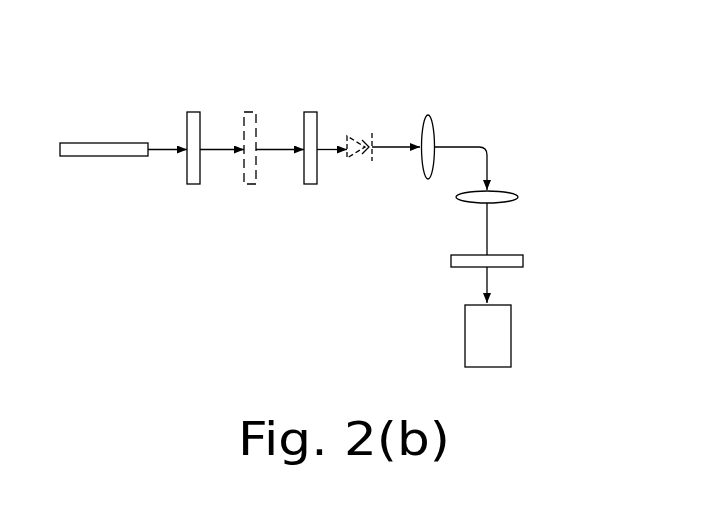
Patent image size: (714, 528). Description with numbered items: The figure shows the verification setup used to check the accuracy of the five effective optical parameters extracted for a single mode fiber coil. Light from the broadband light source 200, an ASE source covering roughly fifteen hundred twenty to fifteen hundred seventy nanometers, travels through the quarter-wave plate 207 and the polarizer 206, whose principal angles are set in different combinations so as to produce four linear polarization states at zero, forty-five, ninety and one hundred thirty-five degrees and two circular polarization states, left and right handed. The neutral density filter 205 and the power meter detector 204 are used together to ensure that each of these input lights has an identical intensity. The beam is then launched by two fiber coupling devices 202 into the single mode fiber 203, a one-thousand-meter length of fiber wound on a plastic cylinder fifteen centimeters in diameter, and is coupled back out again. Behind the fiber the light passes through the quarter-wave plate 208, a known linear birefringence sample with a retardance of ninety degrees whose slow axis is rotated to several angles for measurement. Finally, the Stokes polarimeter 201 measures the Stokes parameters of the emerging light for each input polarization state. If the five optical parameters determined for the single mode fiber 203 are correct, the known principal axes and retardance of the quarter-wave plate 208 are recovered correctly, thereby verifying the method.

The light source 200 is at (84, 142).
The quarter-wave plate 207 is at (193, 110).
The polarizer 206 is at (253, 110).
The neutral density filter 205 is at (313, 110).
The power meter detector 204 is at (357, 158).
The fiber coupling devices 202 is at (456, 198).
The single mode fiber 203 is at (484, 143).
The quarter-wave plate 208 is at (517, 246).
The Stokes polarimeter 201 is at (511, 335).